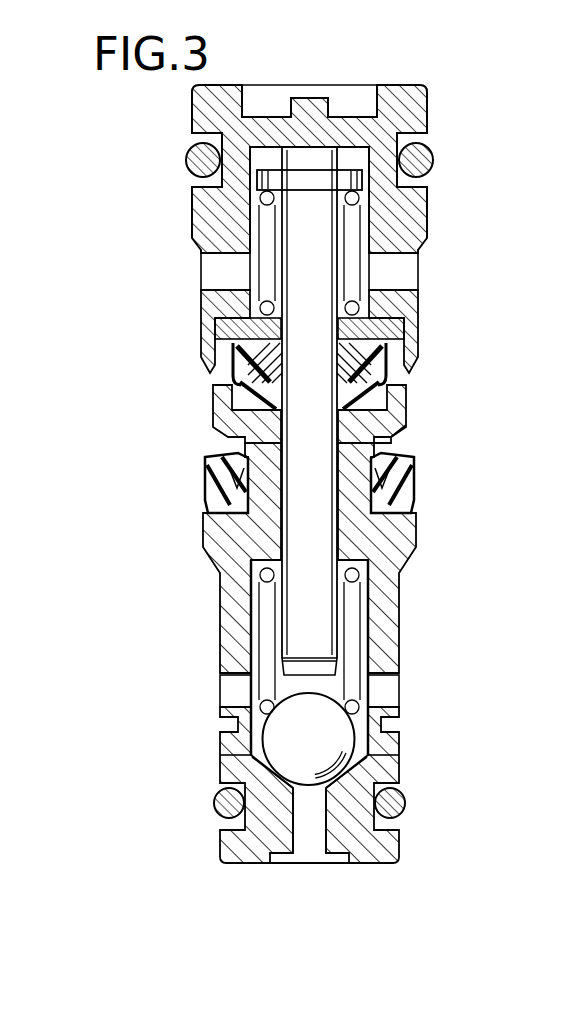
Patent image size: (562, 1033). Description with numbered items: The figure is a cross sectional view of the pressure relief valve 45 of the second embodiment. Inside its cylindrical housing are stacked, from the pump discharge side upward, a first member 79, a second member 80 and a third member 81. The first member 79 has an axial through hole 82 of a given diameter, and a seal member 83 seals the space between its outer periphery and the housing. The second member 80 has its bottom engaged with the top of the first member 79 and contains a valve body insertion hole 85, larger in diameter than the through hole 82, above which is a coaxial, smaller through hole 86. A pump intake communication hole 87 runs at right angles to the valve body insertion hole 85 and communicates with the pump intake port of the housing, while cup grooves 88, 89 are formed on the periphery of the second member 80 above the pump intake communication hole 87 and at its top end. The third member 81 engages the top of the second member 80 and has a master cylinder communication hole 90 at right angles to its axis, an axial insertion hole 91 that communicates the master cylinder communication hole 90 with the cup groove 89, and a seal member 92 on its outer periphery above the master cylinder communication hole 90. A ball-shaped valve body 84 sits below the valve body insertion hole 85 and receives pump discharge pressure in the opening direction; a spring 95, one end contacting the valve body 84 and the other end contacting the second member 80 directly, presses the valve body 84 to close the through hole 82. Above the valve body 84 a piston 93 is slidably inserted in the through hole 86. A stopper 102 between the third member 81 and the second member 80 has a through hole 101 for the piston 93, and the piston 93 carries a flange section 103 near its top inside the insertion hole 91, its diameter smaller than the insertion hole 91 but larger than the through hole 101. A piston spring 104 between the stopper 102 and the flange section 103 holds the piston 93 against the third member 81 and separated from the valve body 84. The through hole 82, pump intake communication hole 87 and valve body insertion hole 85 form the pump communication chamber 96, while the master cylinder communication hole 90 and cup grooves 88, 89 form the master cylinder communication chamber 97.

The relief valve 45 is at (446, 85).
The first member 79 is at (393, 765).
The second member 80 is at (405, 545).
The third member 81 is at (420, 212).
The through hole 82 is at (325, 830).
The seal member 83 is at (393, 807).
The valve body 84 is at (343, 737).
The valve body insertion hole 85 is at (262, 612).
The through hole 86 is at (287, 465).
The pump intake communication hole 87 is at (243, 708).
The cup groove 88 is at (210, 500).
The cup groove 89 is at (226, 384).
The master cylinder communication hole 90 is at (250, 283).
The insertion hole 91 is at (372, 290).
The seal member 92 is at (436, 157).
The piston 93 is at (395, 432).
The spring 95 is at (386, 610).
The pump communication chamber 96 is at (290, 684).
The master cylinder communication chamber 97 is at (368, 265).
The through hole 101 is at (405, 352).
The stopper 102 is at (404, 328).
The flange section 103 is at (352, 172).
The piston spring 104 is at (256, 216).